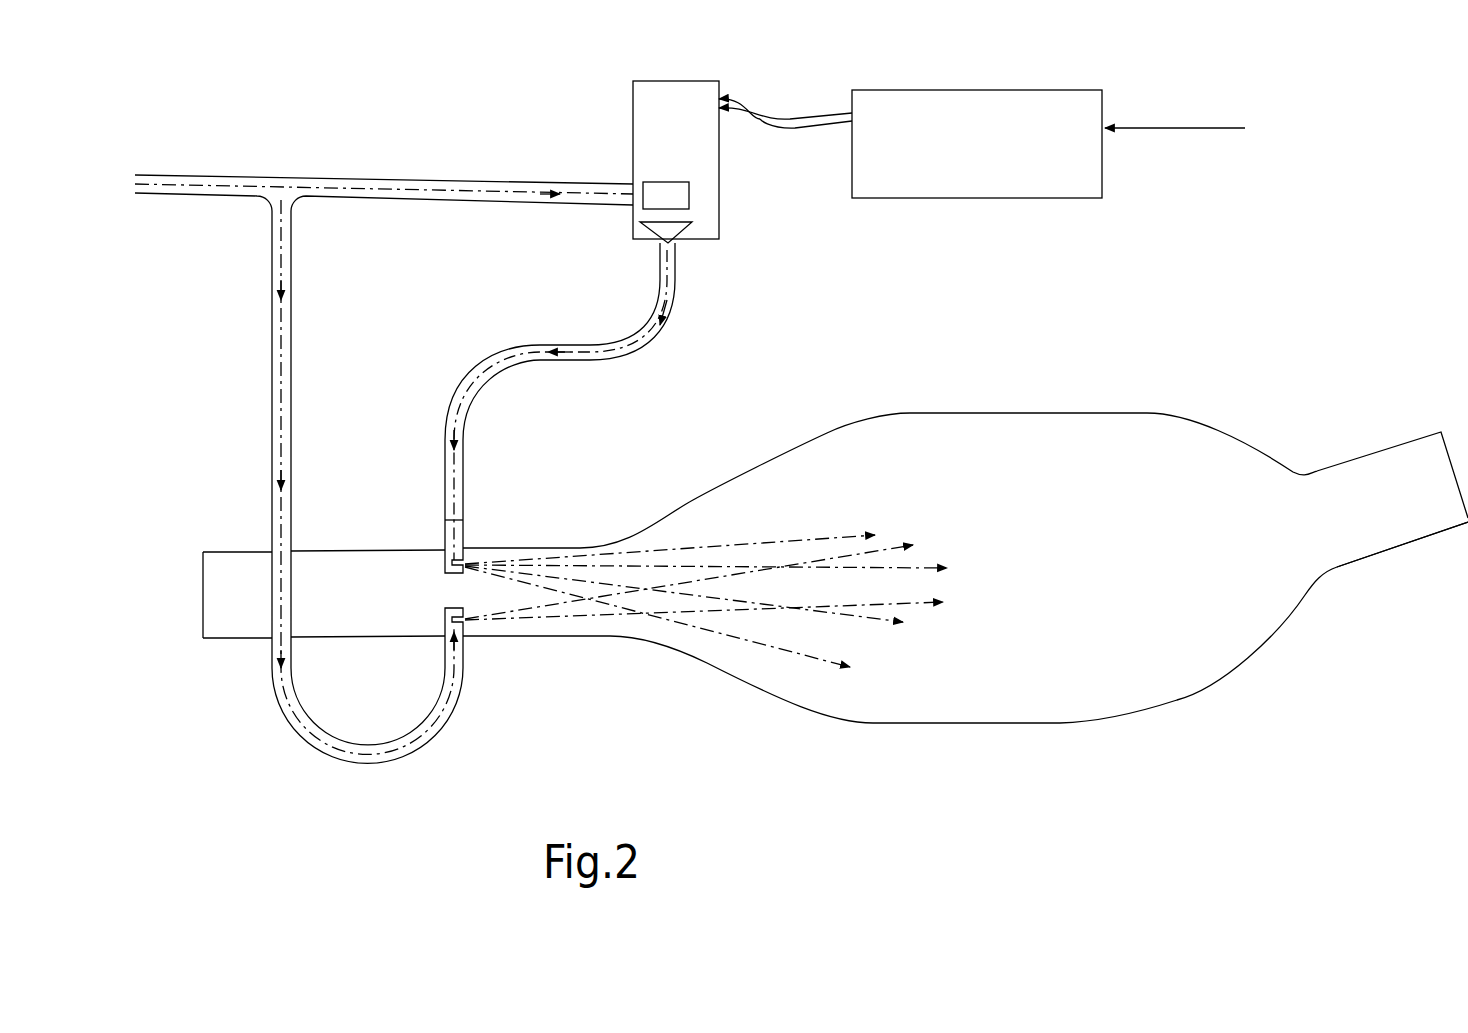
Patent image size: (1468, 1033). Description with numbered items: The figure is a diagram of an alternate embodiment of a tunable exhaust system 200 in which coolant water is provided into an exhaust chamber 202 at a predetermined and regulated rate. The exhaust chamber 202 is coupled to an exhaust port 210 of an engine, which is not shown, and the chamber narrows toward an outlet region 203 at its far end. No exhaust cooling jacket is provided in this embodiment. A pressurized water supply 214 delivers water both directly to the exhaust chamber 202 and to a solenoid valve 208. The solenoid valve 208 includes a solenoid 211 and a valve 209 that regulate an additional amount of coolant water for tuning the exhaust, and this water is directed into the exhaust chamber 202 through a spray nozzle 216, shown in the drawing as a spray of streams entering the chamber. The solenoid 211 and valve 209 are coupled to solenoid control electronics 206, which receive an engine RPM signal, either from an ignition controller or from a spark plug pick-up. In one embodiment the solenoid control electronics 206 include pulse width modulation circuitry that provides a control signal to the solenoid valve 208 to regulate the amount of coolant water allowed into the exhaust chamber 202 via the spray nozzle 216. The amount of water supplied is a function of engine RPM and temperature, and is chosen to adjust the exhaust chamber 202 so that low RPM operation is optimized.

The tunable exhaust system 200 is at (1145, 672).
The exhaust chamber 202 is at (1107, 413).
The outlet neck 203 is at (1385, 553).
The solenoid control electronics 206 is at (1003, 199).
The solenoid valve 208 is at (633, 124).
The valve 209 is at (687, 237).
The exhaust port 210 is at (226, 603).
The solenoid 211 is at (689, 203).
The pressurized water supply 214 is at (247, 174).
The spray nozzle 216 is at (443, 565).